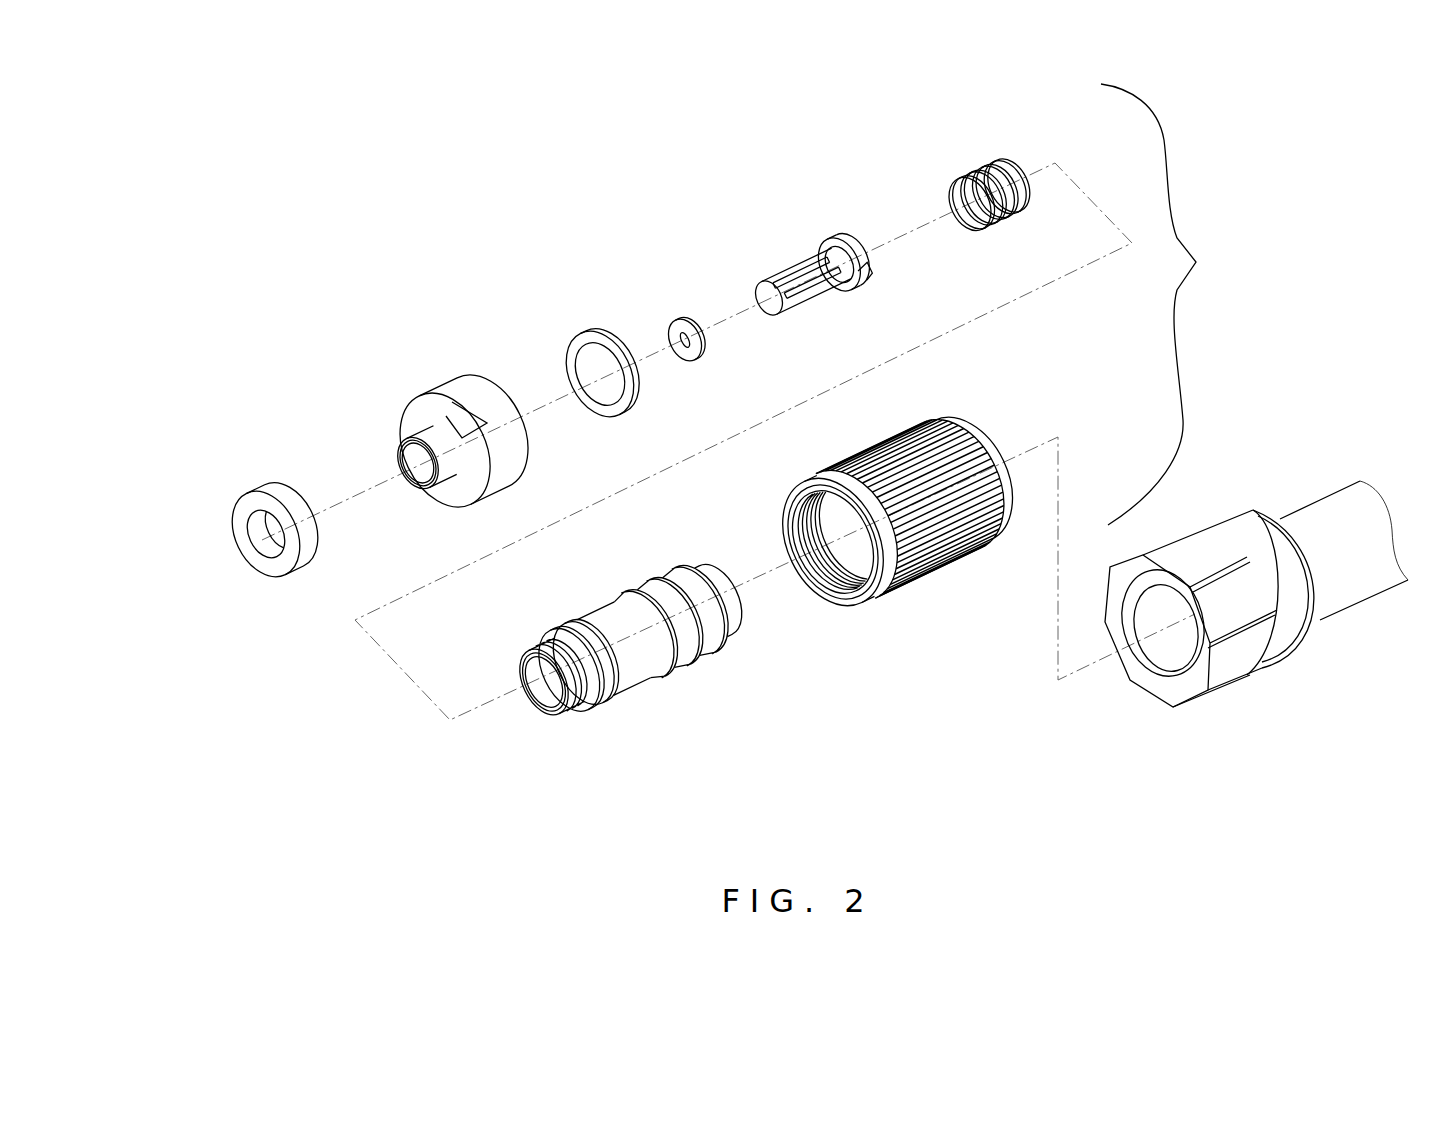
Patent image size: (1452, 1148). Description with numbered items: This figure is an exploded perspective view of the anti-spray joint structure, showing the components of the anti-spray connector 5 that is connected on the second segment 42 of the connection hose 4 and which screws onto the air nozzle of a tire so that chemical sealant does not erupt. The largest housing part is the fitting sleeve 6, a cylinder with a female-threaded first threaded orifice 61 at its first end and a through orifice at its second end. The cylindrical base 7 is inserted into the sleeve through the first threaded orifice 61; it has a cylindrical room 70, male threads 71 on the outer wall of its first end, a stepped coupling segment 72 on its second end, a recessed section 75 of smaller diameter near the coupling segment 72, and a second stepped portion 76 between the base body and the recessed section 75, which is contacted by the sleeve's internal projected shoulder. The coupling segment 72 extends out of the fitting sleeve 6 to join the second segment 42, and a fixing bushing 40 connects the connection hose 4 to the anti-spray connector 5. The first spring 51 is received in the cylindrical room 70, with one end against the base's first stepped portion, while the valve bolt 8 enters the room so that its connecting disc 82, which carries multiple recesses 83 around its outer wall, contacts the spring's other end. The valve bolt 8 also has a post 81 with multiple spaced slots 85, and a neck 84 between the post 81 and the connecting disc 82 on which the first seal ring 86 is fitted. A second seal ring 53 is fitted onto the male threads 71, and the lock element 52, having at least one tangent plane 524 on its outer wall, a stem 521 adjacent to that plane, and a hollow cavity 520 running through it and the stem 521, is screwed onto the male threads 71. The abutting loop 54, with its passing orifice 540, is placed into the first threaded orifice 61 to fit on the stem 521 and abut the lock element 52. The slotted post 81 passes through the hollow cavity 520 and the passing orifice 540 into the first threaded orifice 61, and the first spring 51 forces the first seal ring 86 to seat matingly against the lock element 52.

The connection hose 4 is at (1393, 580).
The fixing bushing 40 is at (1250, 658).
The second segment 42 is at (1337, 573).
The anti-spray connector 5 is at (1163, 304).
The first spring 51 is at (968, 180).
The lock element 52 is at (492, 407).
The hollow cavity 520 is at (410, 458).
The stem 521 is at (412, 452).
The tangent plane 524 is at (445, 417).
The second seal ring 53 is at (588, 338).
The abutting loop 54 is at (267, 493).
The passing orifice 540 is at (258, 528).
The fitting sleeve 6 is at (947, 550).
The first threaded orifice 61 is at (830, 588).
The cylindrical base 7 is at (607, 697).
The cylindrical room 70 is at (547, 693).
The male threads 71 is at (585, 710).
The coupling segment 72 is at (712, 627).
The recessed section 75 is at (630, 680).
The second stepped portion 76 is at (603, 610).
The valve bolt 8 is at (737, 303).
The post 81 is at (832, 245).
The connecting disc 82 is at (848, 235).
The recesses 83 is at (865, 252).
The neck 84 is at (862, 285).
The spaced slots 85 is at (785, 277).
The first seal ring 86 is at (672, 327).